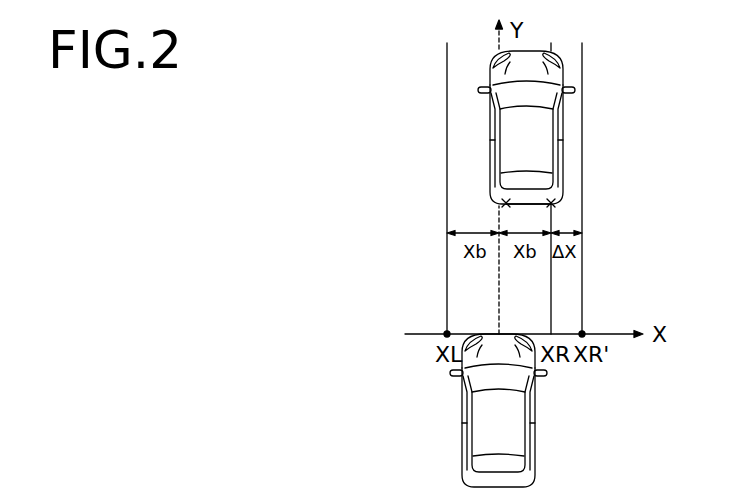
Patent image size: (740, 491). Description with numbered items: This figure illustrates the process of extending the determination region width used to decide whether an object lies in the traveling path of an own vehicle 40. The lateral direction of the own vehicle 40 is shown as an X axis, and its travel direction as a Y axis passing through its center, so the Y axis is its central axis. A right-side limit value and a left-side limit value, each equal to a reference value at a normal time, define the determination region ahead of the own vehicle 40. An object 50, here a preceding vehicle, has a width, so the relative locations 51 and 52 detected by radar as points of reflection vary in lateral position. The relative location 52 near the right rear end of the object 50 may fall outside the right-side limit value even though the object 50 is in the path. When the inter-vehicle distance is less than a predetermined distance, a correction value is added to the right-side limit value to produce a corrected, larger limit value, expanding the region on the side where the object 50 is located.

The own vehicle 40 is at (535, 443).
The object 50 is at (563, 146).
The relative location 51 is at (509, 205).
The relative location 52 is at (553, 201).